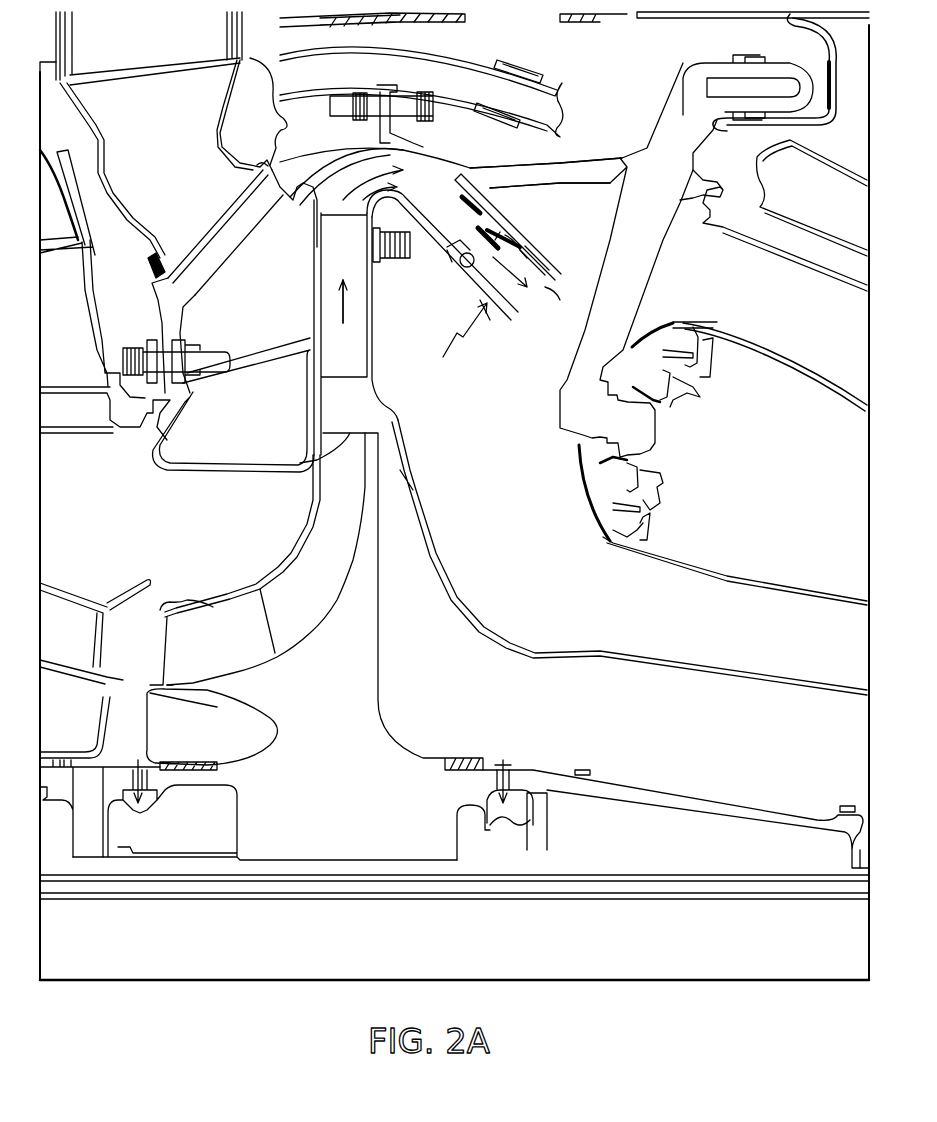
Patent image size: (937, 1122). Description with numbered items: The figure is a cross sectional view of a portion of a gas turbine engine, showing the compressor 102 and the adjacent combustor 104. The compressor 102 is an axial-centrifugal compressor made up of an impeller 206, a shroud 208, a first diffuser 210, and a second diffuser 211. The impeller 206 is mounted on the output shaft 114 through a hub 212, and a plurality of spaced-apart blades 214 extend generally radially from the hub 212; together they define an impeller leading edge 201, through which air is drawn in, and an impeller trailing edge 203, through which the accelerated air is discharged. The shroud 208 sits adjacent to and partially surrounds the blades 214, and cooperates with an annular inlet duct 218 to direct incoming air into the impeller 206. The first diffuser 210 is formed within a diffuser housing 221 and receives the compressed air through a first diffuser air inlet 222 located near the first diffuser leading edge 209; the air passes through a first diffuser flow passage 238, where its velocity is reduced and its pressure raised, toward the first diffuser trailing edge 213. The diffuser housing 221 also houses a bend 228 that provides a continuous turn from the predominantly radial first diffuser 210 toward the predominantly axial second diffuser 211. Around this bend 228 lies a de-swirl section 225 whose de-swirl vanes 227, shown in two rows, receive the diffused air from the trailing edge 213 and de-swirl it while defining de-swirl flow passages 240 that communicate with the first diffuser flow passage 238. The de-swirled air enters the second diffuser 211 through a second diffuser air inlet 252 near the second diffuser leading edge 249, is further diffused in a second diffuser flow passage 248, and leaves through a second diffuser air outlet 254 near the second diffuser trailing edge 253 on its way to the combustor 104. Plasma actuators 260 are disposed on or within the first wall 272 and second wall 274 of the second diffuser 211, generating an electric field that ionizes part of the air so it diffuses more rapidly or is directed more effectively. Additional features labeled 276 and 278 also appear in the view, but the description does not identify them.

The compressor 102 is at (120, 517).
The combustor 104 is at (756, 277).
The output shaft 114 is at (357, 867).
The impeller leading edge 201 is at (186, 656).
The impeller trailing edge 203 is at (308, 478).
The impeller 206 is at (262, 835).
The shroud 208 is at (177, 603).
The first diffuser leading edge 209 is at (350, 373).
The first diffuser 210 is at (284, 317).
The second diffuser 211 is at (456, 337).
The hub 212 is at (350, 784).
The first diffuser trailing edge 213 is at (343, 222).
The blades 214 is at (320, 604).
The annular inlet duct 218 is at (123, 623).
The diffuser housing 221 is at (470, 217).
The first diffuser air inlet 222 is at (314, 418).
The de-swirl section 225 is at (442, 150).
The de-swirl vanes 227 is at (447, 217).
The bend 228 is at (340, 177).
The first diffuser flow passage 238 is at (321, 297).
The de-swirl flow passages 240 is at (377, 187).
The second diffuser flow passage 248 is at (513, 267).
The second diffuser leading edge 249 is at (457, 270).
The second diffuser air inlet 252 is at (490, 223).
The second diffuser trailing edge 253 is at (540, 290).
The second diffuser air outlet 254 is at (497, 307).
The plasma actuators 260 is at (505, 238).
The first wall 272 is at (540, 277).
The second wall 274 is at (490, 320).
The transition duct 276 is at (480, 213).
The bracket nut 278 is at (447, 247).